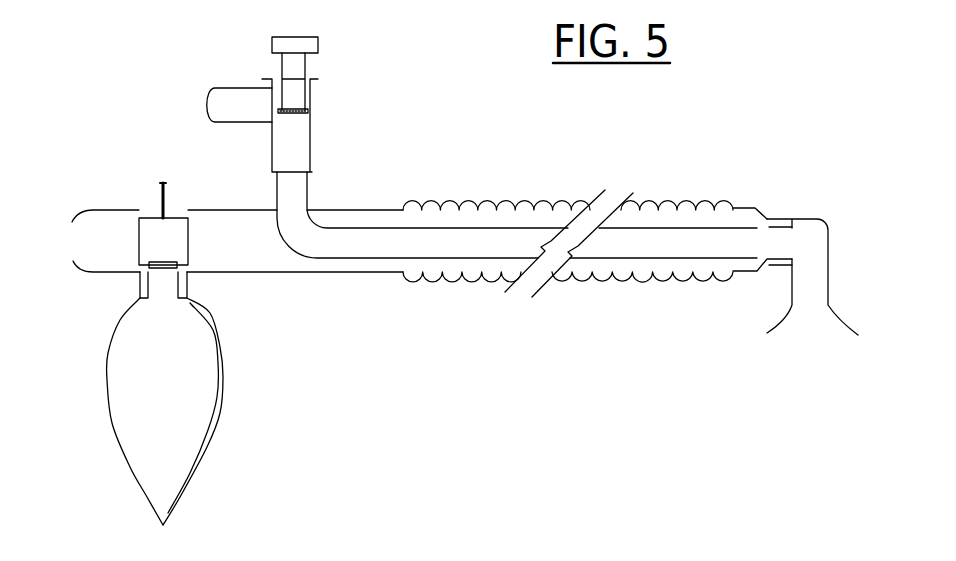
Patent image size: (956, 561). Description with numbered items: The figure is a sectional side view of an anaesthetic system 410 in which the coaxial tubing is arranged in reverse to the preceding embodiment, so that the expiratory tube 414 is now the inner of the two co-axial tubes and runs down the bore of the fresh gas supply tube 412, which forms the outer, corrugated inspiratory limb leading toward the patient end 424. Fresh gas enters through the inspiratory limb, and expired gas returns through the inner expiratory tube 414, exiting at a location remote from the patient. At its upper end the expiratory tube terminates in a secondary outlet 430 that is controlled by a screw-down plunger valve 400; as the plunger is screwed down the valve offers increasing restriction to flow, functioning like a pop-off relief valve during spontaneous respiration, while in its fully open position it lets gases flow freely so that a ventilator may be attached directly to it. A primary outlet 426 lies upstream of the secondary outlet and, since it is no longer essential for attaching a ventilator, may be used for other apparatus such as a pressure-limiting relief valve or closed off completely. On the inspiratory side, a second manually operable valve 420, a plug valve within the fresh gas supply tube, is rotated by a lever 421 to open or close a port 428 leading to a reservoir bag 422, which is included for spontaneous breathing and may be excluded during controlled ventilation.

The screw-down plunger valve 400 is at (292, 115).
The anaesthetic system 410 is at (488, 377).
The fresh gas supply tube 412 is at (462, 276).
The expiratory tube 414 is at (487, 238).
The second manually operable valve 420 is at (150, 227).
The lever 421 is at (163, 183).
The reservoir bag 422 is at (203, 397).
The patient end 424 is at (803, 311).
The primary outlet 426 is at (163, 178).
The port 428 is at (162, 290).
The secondary outlet 430 is at (213, 105).